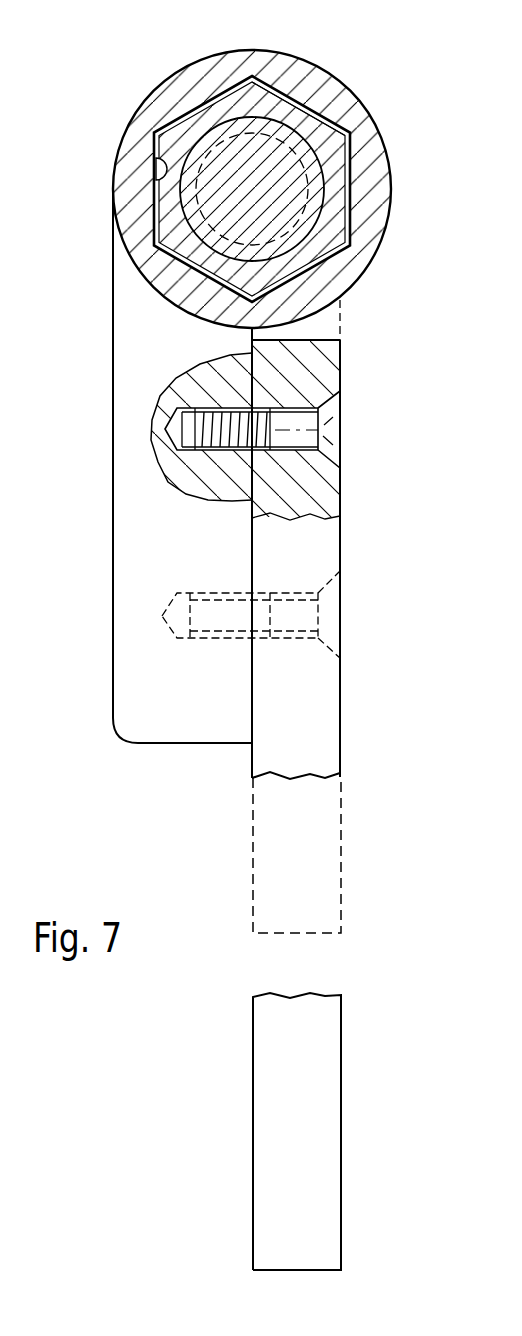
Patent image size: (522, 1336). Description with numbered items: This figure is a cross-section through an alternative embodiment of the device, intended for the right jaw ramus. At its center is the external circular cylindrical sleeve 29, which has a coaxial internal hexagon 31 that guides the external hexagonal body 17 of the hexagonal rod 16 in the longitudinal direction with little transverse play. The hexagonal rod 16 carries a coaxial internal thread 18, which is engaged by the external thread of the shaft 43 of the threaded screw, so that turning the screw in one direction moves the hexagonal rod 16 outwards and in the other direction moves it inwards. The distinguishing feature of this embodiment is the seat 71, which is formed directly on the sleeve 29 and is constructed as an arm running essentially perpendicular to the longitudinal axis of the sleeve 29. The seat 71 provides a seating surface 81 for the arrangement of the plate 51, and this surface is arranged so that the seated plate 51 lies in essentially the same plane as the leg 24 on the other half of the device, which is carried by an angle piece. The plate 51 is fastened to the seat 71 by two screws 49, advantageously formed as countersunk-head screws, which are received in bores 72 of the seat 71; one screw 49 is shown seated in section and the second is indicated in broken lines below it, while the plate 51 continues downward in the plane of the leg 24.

The hexagonal rod 16 is at (212, 133).
The external hexagonal body 17 is at (158, 200).
The internal thread 18 is at (242, 98).
The shank 24 is at (328, 870).
The sleeve 29 is at (328, 70).
The internal hexagon 31 is at (160, 160).
The shaft 43 is at (290, 200).
The screws 49 is at (330, 418).
The plate 51 is at (305, 495).
The seat 71 is at (137, 546).
The bores 72 is at (170, 419).
The seating surface 81 is at (250, 547).